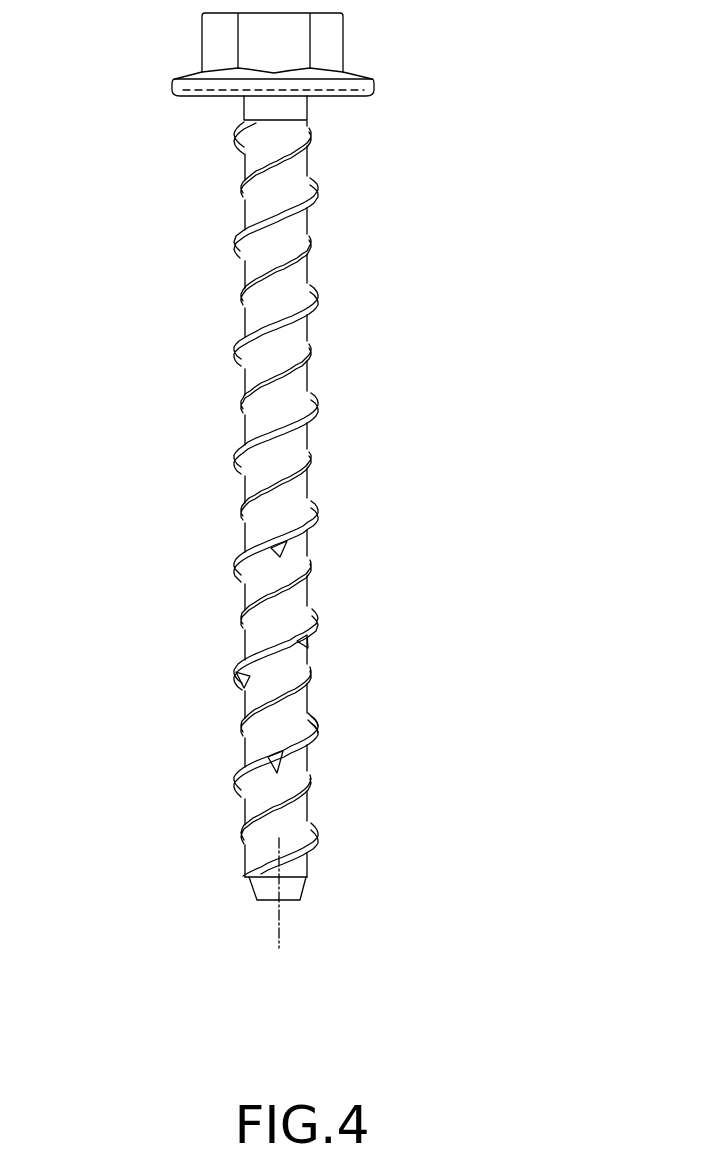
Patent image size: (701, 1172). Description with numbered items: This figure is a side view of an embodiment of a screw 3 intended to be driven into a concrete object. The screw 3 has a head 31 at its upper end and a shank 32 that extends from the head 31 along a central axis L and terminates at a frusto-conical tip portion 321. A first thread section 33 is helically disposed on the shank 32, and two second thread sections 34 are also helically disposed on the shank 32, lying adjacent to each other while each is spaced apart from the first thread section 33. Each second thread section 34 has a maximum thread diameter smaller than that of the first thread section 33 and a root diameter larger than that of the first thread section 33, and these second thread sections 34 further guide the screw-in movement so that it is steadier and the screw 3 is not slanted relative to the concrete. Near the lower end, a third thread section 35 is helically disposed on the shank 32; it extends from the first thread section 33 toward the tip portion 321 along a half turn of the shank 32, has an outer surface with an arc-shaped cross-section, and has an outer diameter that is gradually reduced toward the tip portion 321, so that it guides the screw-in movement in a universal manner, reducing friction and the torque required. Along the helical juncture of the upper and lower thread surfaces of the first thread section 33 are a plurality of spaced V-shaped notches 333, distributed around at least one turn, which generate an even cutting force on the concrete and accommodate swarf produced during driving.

The screw 3 is at (152, 258).
The head 31 is at (336, 47).
The shank 32 is at (300, 233).
The first thread section 33 is at (352, 305).
The second thread sections 34 is at (320, 373).
The V-shaped notches 333 is at (318, 753).
The third thread section 35 is at (312, 845).
The tip portion 321 is at (298, 883).
The central axis L is at (279, 909).